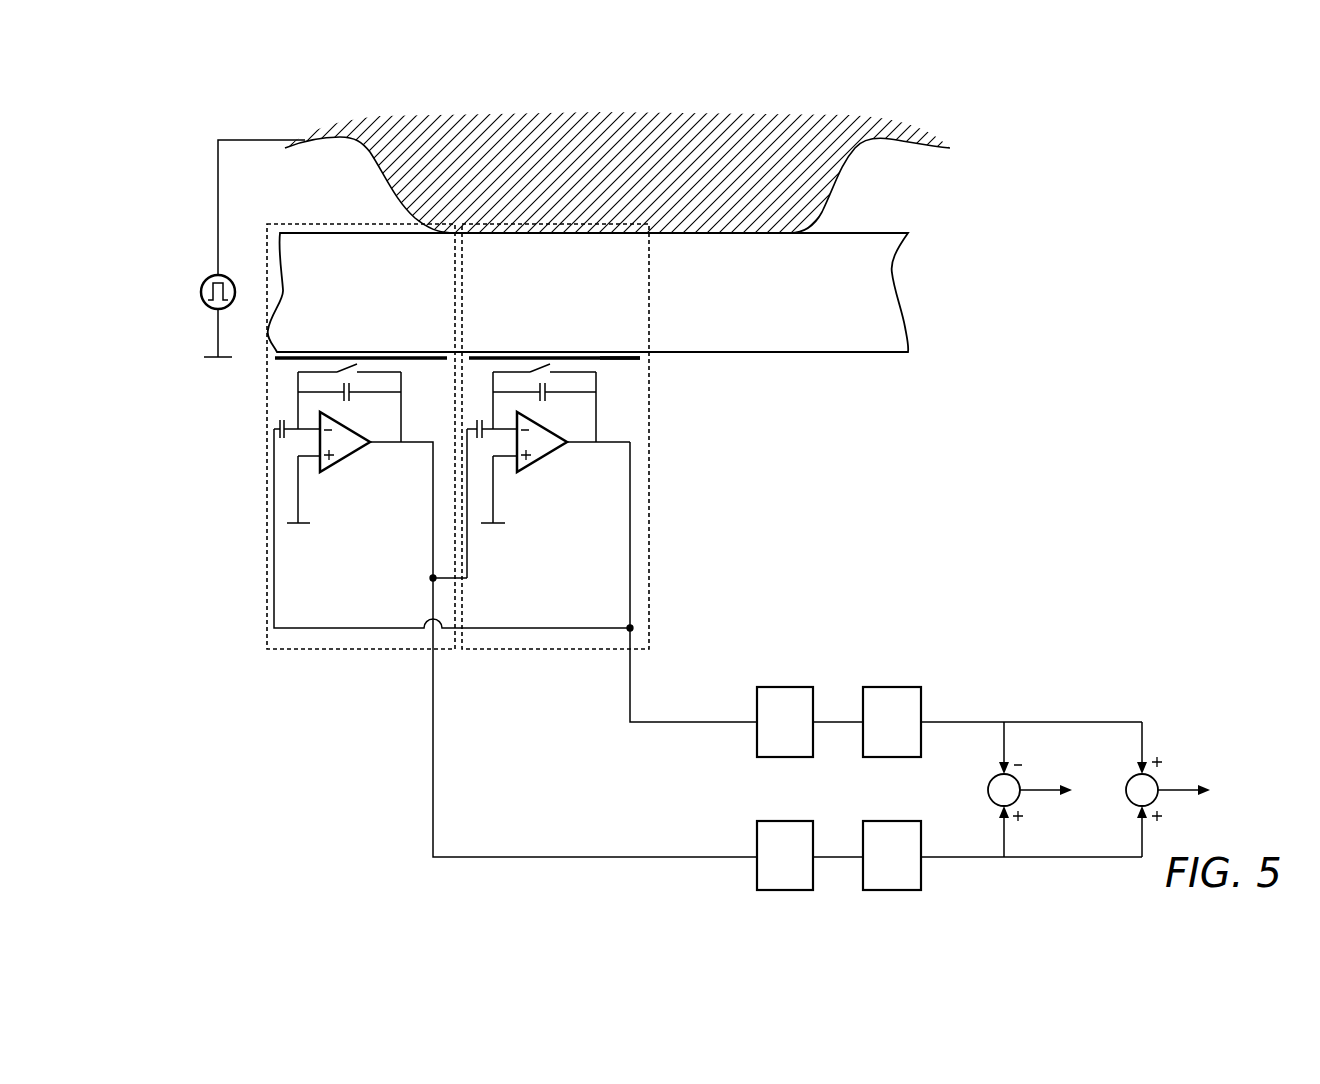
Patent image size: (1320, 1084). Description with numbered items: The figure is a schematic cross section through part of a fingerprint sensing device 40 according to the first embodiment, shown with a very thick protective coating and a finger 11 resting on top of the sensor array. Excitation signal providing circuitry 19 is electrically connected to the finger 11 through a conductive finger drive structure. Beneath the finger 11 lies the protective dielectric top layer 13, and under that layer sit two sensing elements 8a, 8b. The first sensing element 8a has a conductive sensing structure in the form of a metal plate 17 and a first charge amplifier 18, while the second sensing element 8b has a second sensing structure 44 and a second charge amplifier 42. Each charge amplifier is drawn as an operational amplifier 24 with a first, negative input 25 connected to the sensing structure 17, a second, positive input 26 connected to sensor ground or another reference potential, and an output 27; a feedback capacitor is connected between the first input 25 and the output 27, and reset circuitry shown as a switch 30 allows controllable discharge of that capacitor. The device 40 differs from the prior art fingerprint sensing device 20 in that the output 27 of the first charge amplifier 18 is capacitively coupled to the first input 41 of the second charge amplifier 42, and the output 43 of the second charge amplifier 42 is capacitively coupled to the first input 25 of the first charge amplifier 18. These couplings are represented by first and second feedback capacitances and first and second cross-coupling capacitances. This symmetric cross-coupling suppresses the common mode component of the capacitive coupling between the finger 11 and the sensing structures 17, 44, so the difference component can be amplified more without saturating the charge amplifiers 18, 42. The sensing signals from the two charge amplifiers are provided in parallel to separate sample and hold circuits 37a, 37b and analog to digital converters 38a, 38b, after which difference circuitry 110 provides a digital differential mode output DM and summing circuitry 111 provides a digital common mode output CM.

The finger 11 is at (619, 171).
The protective dielectric top layer 13 is at (573, 286).
The sensing structure 17 is at (622, 358).
The first charge amplifier 18 is at (538, 484).
The excitation signal providing circuitry 19 is at (201, 292).
The fingerprint sensing device 20 is at (605, 468).
The operational amplifier 24 is at (568, 442).
The first input 25 is at (490, 429).
The second input 26 is at (506, 460).
The output 27 is at (557, 450).
The switch 30 is at (548, 366).
The fingerprint sensing device 40 is at (1057, 206).
The first input 41 is at (318, 430).
The second charge amplifier 42 is at (360, 480).
The output 43 is at (371, 444).
The second sensing structure 44 is at (395, 358).
The first sensing element 8a is at (660, 520).
The second sensing element 8b is at (250, 584).
The sample and hold circuit 37a is at (784, 687).
The sample and hold circuit 37b is at (757, 838).
The analog to digital converter 38a is at (896, 687).
The analog to digital converter 38b is at (921, 868).
The difference circuitry 110 is at (1000, 774).
The summing circuitry 111 is at (1137, 774).